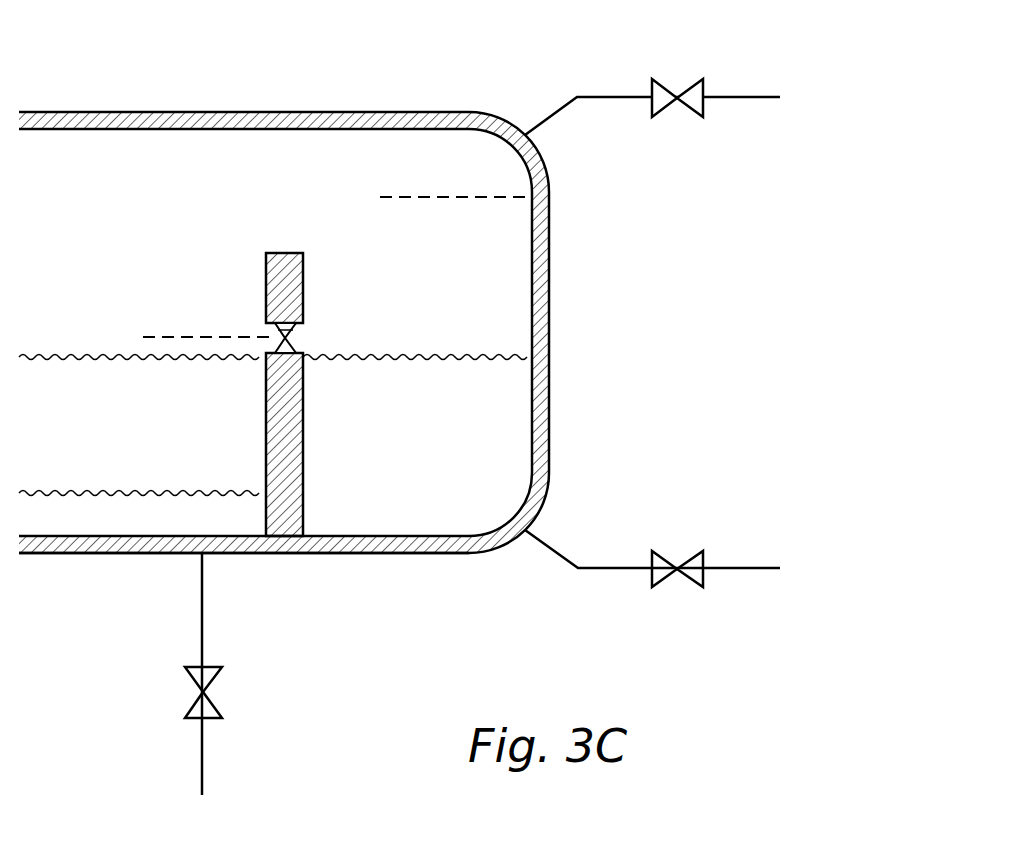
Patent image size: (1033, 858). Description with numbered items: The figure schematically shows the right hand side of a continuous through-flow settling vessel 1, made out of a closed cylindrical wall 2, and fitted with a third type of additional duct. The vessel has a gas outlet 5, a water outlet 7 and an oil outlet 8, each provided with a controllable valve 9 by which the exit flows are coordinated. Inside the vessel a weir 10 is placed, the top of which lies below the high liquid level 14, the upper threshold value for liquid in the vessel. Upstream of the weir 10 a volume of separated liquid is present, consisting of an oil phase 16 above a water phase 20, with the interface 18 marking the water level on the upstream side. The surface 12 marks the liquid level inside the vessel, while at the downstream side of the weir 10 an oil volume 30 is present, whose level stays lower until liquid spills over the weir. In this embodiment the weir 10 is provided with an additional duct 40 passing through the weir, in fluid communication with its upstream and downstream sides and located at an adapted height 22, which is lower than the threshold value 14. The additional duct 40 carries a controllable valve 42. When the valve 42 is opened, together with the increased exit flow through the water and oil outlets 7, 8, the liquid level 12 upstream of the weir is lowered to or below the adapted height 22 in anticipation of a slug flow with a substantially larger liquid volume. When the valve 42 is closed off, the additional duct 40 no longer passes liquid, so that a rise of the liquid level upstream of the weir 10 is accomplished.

The continuous through-flow settling vessel 1 is at (660, 281).
The closed cylindrical wall 2 is at (543, 394).
The gas outlet 5 is at (556, 112).
The water outlet 7 is at (204, 600).
The oil outlet 8 is at (551, 548).
The valve 9 is at (677, 97).
The weir 10 is at (290, 290).
The liquid level 12 is at (48, 350).
The high liquid level 14 is at (400, 195).
The oil phase 16 is at (48, 445).
The interface 18 is at (135, 487).
The water phase 20 is at (92, 520).
The adapted height 22 is at (153, 335).
The oil volume 30 is at (427, 452).
The additional duct 40 is at (306, 338).
The controllable valve 42 is at (276, 331).